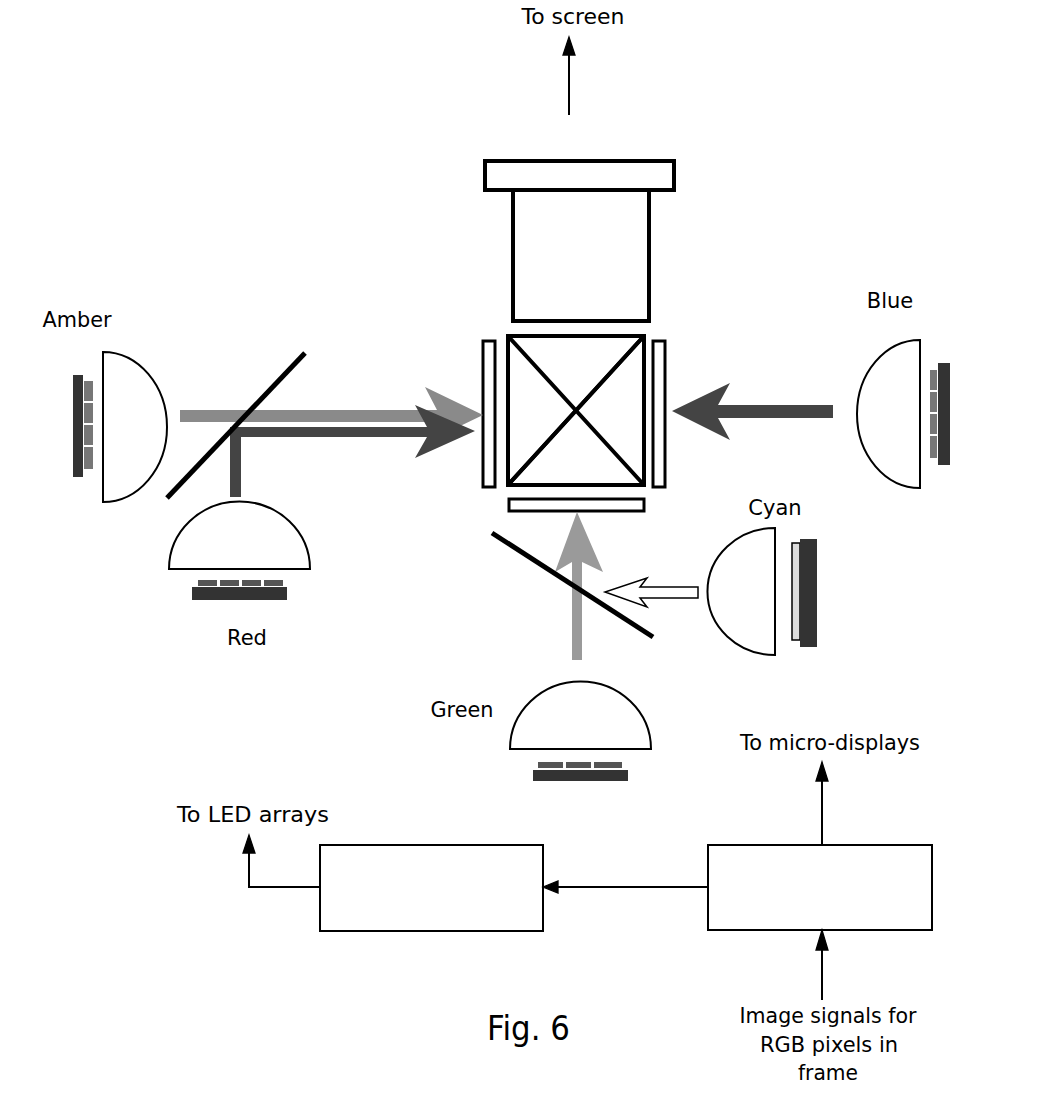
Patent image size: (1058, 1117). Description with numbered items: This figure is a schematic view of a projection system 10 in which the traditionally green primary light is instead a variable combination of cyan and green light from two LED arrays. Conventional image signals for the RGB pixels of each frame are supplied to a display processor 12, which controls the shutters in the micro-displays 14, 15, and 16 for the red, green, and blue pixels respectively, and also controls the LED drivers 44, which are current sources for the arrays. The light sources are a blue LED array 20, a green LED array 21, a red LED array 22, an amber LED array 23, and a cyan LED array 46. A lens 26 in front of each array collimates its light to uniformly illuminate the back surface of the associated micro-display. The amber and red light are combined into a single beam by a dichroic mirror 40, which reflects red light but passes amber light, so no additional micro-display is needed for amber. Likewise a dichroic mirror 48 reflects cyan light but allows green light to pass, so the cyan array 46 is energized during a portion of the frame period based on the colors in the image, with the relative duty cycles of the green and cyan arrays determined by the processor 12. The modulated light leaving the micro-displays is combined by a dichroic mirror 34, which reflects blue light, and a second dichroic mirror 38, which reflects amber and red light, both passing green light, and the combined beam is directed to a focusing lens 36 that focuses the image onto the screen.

The projection system 10 is at (316, 166).
The display processor 12 is at (787, 845).
The micro-display 14 is at (478, 455).
The micro-display 15 is at (620, 512).
The micro-display 16 is at (666, 456).
The blue LED array 20 is at (935, 460).
The green LED array 21 is at (530, 765).
The red LED array 22 is at (190, 587).
The amber LED array 23 is at (87, 463).
The lens 26 is at (157, 383).
The dichroic mirror 34 is at (533, 355).
The focusing lens 36 is at (658, 248).
The second dichroic mirror 38 is at (623, 353).
The dichroic mirror 40 is at (267, 390).
The LED drivers 44 is at (430, 932).
The cyan LED array 46 is at (797, 640).
The dichroic mirror 48 is at (530, 560).